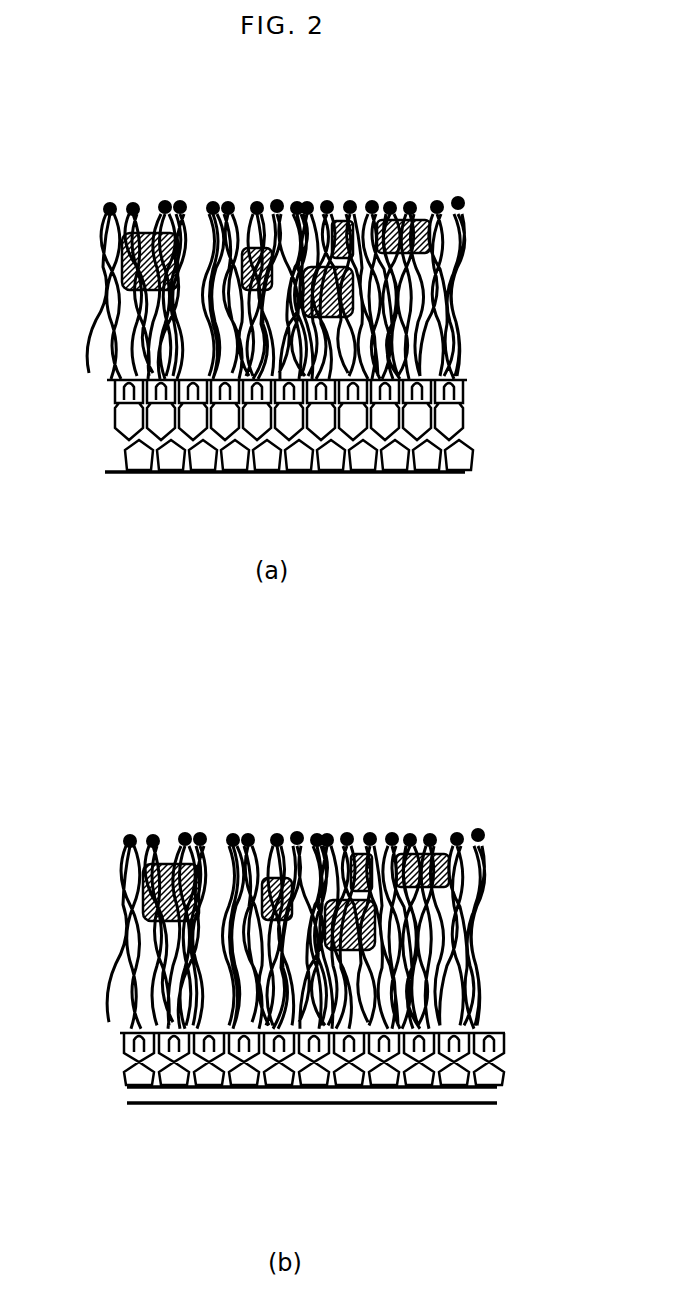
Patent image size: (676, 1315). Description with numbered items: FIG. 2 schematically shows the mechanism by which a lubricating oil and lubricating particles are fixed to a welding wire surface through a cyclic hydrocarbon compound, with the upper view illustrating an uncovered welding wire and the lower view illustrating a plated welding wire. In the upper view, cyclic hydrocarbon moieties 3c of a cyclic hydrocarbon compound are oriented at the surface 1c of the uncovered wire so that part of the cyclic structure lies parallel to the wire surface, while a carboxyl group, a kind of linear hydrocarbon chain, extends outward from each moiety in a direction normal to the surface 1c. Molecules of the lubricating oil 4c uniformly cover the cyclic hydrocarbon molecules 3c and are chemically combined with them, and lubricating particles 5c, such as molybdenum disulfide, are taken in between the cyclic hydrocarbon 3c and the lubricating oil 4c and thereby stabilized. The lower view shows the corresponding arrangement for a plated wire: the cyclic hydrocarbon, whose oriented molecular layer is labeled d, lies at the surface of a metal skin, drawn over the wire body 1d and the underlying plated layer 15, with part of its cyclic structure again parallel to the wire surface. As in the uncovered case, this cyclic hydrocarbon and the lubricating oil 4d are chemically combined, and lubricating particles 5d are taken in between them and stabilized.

The surface of an uncovered welding wire 1c is at (162, 475).
The cyclic hydrocarbon moieties 3c is at (450, 427).
The lubricating oil 4c is at (466, 208).
The lubricating particles 5c is at (122, 262).
The substrate 1d is at (210, 1080).
The molecular layer cells d is at (497, 1050).
The lubricating oil 4d is at (487, 848).
The lubricating particles 5d is at (150, 900).
The electrode layer 15 is at (480, 1092).